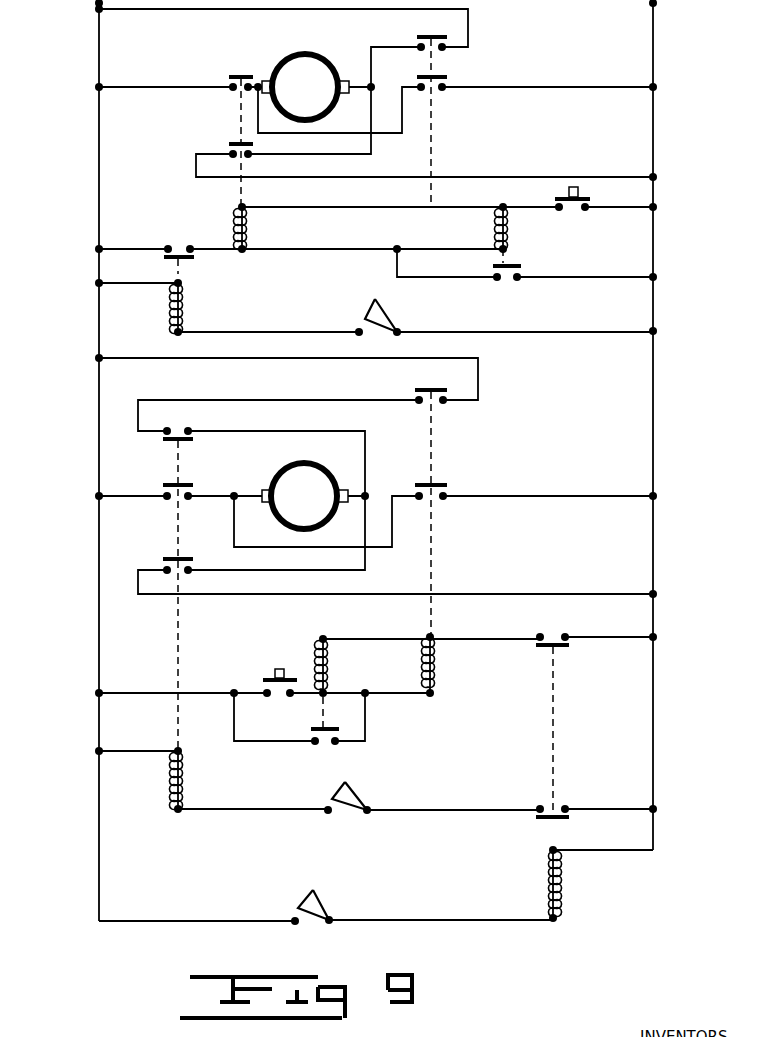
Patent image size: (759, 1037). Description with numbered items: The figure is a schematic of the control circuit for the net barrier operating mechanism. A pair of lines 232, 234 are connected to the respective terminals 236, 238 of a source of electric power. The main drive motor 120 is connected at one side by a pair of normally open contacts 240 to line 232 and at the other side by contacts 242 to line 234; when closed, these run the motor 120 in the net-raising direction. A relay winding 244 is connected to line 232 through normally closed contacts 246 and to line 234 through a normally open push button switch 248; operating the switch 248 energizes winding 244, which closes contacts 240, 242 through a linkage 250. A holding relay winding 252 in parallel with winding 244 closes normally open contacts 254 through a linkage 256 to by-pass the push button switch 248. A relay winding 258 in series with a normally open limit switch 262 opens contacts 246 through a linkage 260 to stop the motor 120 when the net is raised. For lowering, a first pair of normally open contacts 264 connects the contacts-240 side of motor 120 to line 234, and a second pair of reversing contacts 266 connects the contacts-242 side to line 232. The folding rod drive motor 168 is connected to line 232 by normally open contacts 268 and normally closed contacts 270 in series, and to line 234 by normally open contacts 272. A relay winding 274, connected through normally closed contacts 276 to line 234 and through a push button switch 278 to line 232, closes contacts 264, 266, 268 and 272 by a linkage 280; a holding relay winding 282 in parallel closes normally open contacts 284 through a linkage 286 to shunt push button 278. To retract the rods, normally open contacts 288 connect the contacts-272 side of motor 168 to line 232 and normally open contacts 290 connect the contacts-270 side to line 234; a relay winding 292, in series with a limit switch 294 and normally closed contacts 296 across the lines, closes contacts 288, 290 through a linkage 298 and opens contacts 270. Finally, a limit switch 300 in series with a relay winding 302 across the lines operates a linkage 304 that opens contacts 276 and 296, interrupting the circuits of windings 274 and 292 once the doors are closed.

The main drive motor 120 is at (306, 36).
The folding rod drive motor 168 is at (305, 463).
The line 232 is at (99, 48).
The line 234 is at (653, 62).
The terminal 236 is at (99, 3).
The terminal 238 is at (653, 2).
The contacts 240 is at (233, 92).
The contacts 242 is at (251, 157).
The relay winding 244 is at (249, 228).
The normally closed contacts 246 is at (178, 248).
The push button switch 248 is at (588, 210).
The linkage 250 is at (242, 195).
The holding relay winding 252 is at (510, 228).
The normally open contacts 254 is at (517, 280).
The linkage 256 is at (506, 259).
The relay winding 258 is at (186, 310).
The linkage 260 is at (180, 274).
The limit switch 262 is at (384, 282).
The normally open contacts 264 is at (444, 89).
The normally open reversing contacts 266 is at (444, 49).
The normally open contacts 268 is at (445, 402).
The normally closed contacts 270 is at (190, 429).
The normally open contacts 272 is at (446, 498).
The relay winding 274 is at (437, 663).
The normally closed contacts 276 is at (566, 636).
The push button switch 278 is at (270, 697).
The linkage 280 is at (432, 580).
The holding relay winding 282 is at (330, 668).
The normally open contacts 284 is at (336, 746).
The linkage 286 is at (328, 715).
The normally open contacts 288 is at (190, 494).
The normally open contacts 290 is at (190, 568).
The relay winding 292 is at (186, 783).
The limit switch 294 is at (350, 780).
The normally closed contacts 296 is at (566, 808).
The linkage 298 is at (182, 642).
The limit switch 300 is at (316, 890).
The relay winding 302 is at (560, 900).
The linkage 304 is at (553, 733).